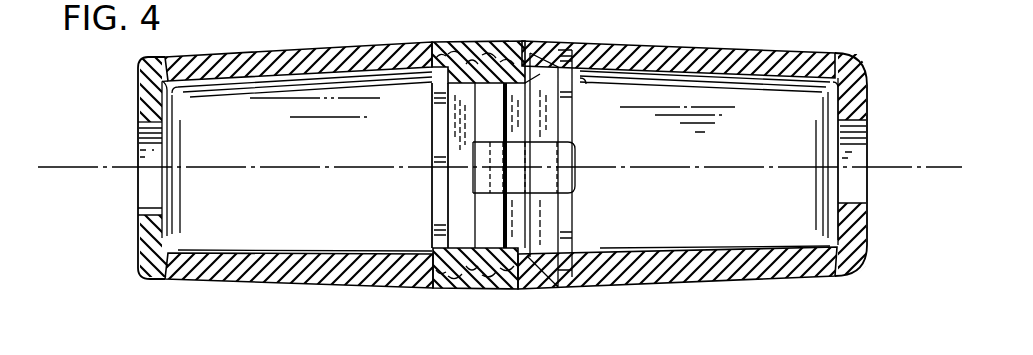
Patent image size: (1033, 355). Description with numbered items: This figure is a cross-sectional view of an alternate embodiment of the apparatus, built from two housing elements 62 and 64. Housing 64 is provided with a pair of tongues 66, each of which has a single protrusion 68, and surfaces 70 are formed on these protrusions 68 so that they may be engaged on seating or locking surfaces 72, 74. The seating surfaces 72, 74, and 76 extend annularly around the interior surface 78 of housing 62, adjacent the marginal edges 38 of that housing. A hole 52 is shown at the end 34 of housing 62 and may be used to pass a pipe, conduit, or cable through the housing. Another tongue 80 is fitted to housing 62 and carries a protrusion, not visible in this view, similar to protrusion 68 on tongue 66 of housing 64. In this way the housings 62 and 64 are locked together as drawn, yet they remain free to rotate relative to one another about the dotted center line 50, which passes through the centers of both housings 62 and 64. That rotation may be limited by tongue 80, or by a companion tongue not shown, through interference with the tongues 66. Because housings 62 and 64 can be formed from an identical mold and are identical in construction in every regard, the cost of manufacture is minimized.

The end 34 is at (139, 98).
The marginal edges 38 is at (573, 234).
The dotted lines 50 is at (60, 169).
The hole 52 is at (162, 208).
The housing element 62 is at (285, 53).
The housing element 64 is at (700, 57).
The tongues 66 is at (432, 90).
The protrusion 68 is at (437, 55).
The surfaces 70 is at (447, 57).
The seating surface 72 is at (466, 62).
The seating surface 74 is at (483, 57).
The seating surface 76 is at (503, 58).
The interior surface 78 is at (501, 161).
The tongue 80 is at (568, 178).